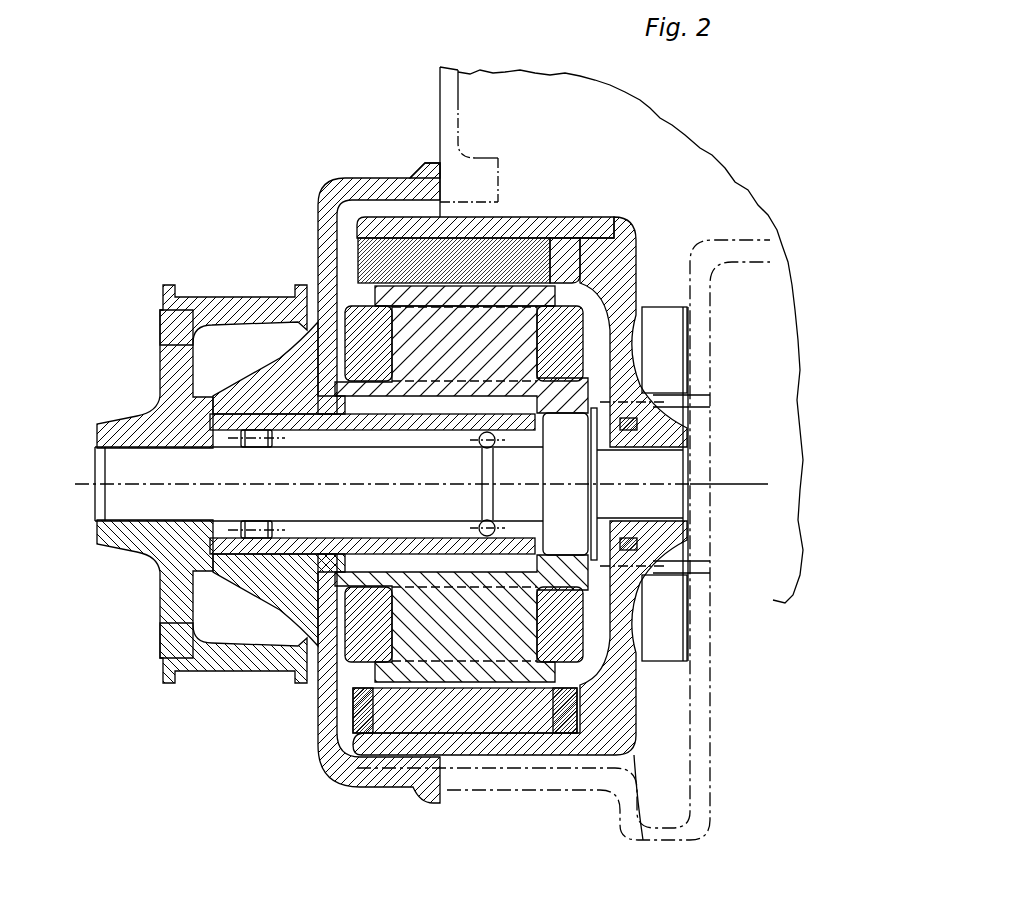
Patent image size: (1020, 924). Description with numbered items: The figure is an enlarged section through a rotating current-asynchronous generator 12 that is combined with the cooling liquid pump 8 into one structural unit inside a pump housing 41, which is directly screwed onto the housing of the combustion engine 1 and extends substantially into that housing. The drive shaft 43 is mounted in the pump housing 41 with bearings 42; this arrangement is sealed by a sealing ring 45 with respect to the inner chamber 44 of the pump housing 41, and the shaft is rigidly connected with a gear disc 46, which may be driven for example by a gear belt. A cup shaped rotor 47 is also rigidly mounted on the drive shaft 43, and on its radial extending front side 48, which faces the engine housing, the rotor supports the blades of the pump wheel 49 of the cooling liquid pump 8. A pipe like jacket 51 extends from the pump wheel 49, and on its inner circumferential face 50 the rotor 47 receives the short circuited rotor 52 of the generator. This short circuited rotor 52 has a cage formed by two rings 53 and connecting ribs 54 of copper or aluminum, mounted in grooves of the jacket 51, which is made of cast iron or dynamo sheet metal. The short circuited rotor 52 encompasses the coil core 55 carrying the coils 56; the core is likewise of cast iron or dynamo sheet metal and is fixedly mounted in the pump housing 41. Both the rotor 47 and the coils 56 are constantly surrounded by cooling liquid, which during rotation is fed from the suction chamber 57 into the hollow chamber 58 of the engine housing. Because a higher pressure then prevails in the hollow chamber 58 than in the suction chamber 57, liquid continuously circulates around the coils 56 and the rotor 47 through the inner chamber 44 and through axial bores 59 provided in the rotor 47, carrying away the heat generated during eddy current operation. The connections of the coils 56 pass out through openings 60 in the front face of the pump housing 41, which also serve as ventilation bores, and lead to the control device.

The combustion engine 1 is at (440, 67).
The cooling liquid pump 8 is at (693, 343).
The rotating current-asynchronous generator 12 is at (350, 290).
The pump housing 41 is at (358, 183).
The bearings 42 is at (258, 533).
The drive shaft 43 is at (133, 495).
The inner chamber 44 is at (390, 763).
The sealing ring 45 is at (575, 460).
The gear disc 46 is at (190, 678).
The cup shaped rotor 47 is at (643, 236).
The radial extending front side 48 is at (640, 720).
The pump wheel 49 is at (663, 323).
The inner circumferential face 50 is at (553, 253).
The pipe like jacket 51 is at (562, 230).
The short circuited rotor 52 is at (410, 208).
The rings 53 is at (360, 246).
The ribs 54 is at (462, 253).
The coil core 55 is at (593, 680).
The coils 56 is at (347, 663).
The suction chamber 57 is at (773, 563).
The hollow chamber 58 is at (487, 94).
The axial bores 59 is at (667, 407).
The openings 60 is at (300, 372).